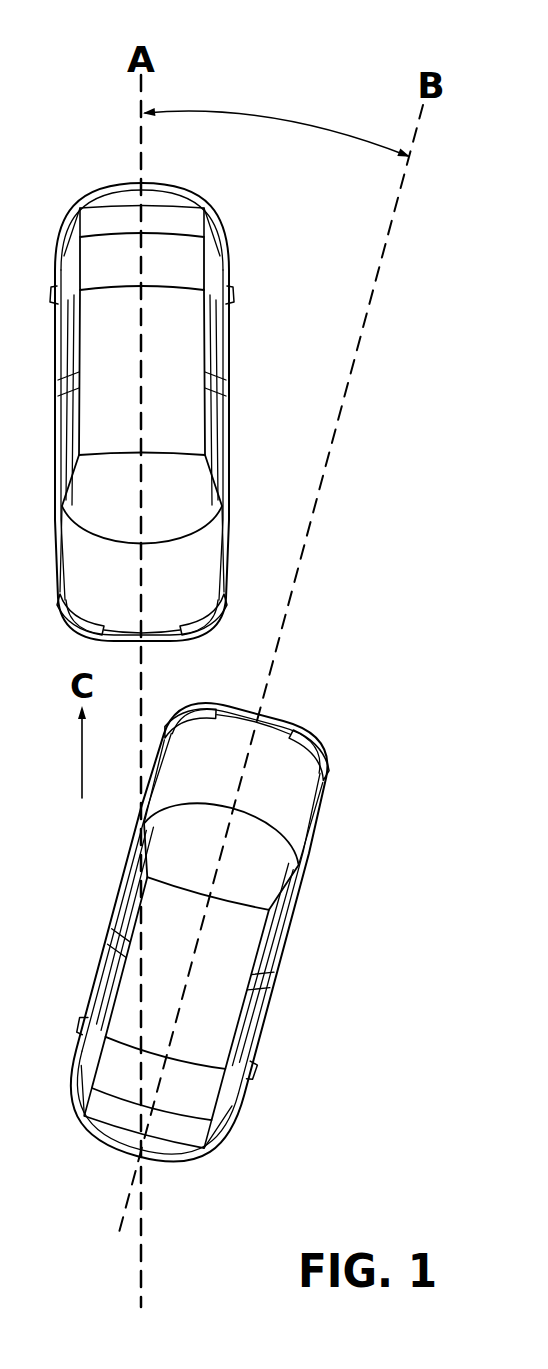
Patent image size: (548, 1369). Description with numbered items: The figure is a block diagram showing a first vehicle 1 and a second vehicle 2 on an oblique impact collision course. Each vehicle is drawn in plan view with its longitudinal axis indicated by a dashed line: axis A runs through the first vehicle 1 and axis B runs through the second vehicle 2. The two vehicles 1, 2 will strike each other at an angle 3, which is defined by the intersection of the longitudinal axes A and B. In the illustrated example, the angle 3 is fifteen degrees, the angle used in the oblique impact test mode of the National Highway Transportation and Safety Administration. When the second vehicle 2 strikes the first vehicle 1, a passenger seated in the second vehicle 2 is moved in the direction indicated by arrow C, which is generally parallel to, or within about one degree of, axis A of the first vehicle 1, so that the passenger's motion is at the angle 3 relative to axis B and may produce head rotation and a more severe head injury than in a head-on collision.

The first vehicle 1 is at (100, 347).
The second vehicle 2 is at (208, 1008).
The angle 3 is at (281, 93).